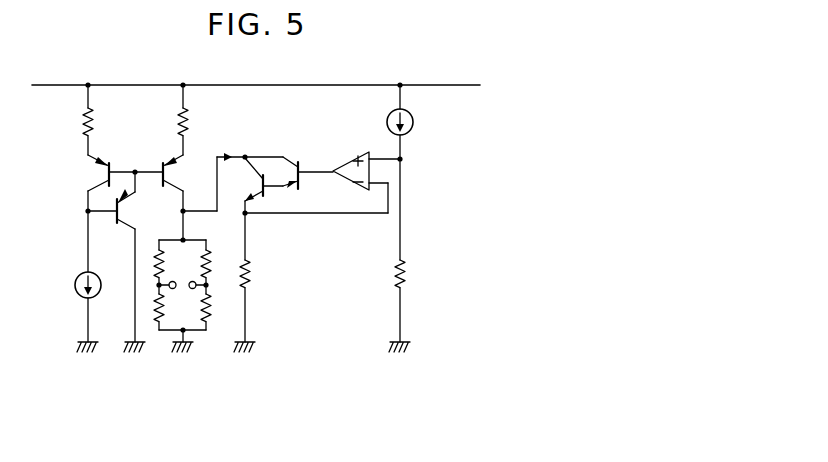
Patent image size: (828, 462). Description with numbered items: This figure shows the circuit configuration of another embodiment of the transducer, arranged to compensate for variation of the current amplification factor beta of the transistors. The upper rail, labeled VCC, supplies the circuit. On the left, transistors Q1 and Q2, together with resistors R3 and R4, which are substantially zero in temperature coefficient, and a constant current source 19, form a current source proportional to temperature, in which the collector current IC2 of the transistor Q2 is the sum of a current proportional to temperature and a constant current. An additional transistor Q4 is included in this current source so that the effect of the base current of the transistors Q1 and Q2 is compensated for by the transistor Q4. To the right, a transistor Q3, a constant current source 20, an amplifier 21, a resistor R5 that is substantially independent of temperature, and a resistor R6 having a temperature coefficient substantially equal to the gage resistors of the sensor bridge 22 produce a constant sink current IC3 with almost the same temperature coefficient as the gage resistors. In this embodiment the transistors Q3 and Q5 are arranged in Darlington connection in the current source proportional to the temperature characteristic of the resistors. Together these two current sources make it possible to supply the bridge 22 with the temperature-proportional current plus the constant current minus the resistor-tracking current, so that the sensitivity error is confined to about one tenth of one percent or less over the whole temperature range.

The constant current source 19 is at (75, 285).
The constant current source 20 is at (413, 122).
The amplifier 21 is at (351, 162).
The sensor bridge 22 is at (200, 334).
The resistor R3 is at (103, 120).
The resistor R4 is at (198, 120).
The resistor R5 is at (260, 277).
The resistor R6 is at (415, 250).
The transistor Q1 is at (102, 174).
The transistor Q2 is at (168, 174).
The transistor Q3 is at (258, 182).
The transistor Q4 is at (126, 222).
The transistor Q5 is at (304, 187).
The collector current IC2 is at (180, 200).
The constant sink current IC3 is at (223, 153).
The supply voltage VCC is at (276, 92).